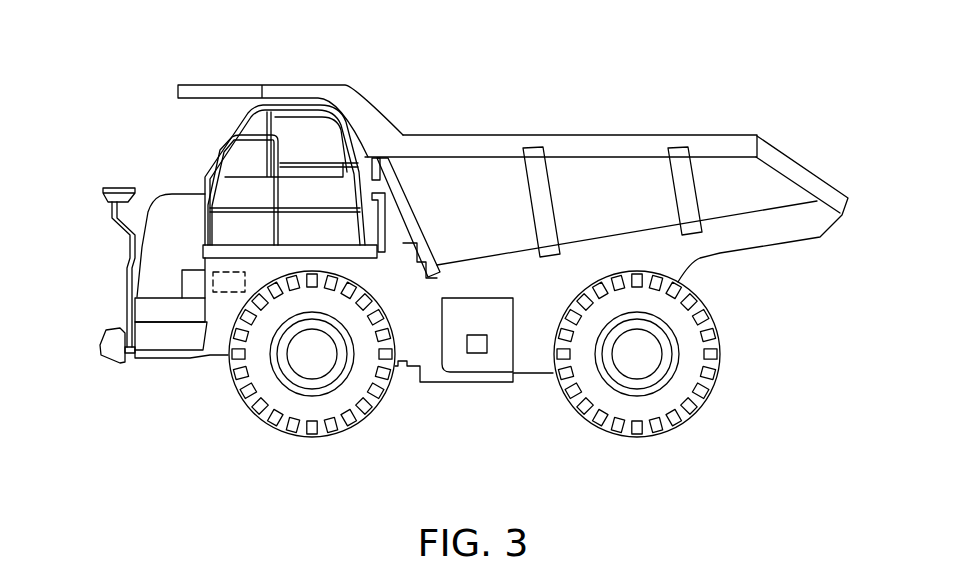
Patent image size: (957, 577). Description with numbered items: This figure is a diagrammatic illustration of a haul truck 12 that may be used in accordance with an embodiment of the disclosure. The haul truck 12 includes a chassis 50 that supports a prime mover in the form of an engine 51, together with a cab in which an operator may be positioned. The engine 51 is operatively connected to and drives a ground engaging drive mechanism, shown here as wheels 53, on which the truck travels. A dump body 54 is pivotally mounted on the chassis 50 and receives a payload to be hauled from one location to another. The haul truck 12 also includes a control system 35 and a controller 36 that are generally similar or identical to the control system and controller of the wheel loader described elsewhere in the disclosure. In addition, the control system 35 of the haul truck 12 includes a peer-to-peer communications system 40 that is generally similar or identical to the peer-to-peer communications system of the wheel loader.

The haul truck 12 is at (137, 105).
The control system 35 is at (161, 78).
The controller 36 is at (230, 270).
The peer-to-peer communications system 40 is at (110, 113).
The chassis 50 is at (222, 338).
The engine 51 is at (180, 217).
The wheels 53 is at (371, 409).
The dump body 54 is at (630, 148).